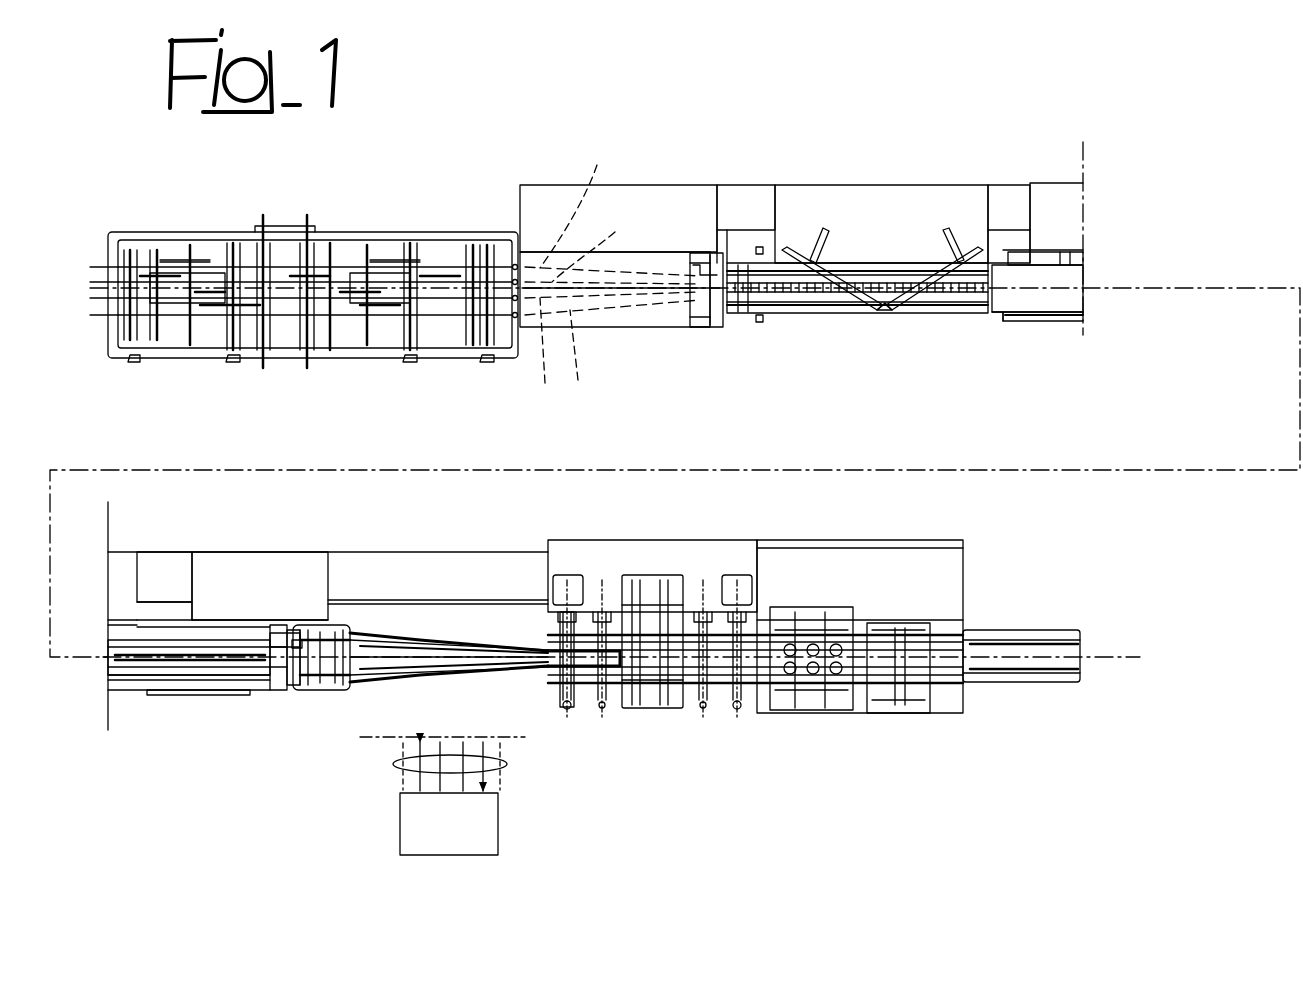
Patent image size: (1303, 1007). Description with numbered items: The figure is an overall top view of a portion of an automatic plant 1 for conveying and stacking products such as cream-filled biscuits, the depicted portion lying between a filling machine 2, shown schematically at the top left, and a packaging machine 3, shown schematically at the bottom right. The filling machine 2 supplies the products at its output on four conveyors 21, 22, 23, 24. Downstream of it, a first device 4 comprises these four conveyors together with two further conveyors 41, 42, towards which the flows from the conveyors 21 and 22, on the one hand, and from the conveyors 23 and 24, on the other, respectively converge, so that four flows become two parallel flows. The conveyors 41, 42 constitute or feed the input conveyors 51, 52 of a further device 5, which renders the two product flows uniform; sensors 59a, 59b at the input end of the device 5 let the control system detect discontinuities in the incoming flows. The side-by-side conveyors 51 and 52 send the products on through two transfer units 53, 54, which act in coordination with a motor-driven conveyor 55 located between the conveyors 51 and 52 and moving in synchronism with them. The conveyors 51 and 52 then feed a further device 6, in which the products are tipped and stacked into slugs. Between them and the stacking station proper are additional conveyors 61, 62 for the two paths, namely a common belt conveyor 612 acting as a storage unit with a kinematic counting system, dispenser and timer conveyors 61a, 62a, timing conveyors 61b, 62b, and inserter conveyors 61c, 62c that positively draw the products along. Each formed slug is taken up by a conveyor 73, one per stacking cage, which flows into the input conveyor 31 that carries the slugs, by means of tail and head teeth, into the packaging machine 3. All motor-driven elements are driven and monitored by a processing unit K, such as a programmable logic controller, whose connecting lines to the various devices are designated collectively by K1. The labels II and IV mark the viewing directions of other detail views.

The portion of automatic plant 1 is at (1040, 498).
The filling machine 2 is at (155, 228).
The conveyor 21 is at (577, 202).
The conveyor 22 is at (598, 241).
The conveyor 23 is at (547, 351).
The conveyor 24 is at (582, 354).
The packaging machine 3 is at (755, 735).
The input conveyor 31 is at (578, 710).
The first device 4 is at (602, 333).
The conveyor 41 is at (700, 265).
The conveyor 42 is at (697, 327).
The further device 5 is at (830, 166).
The input conveyor 51 is at (738, 275).
The input conveyor 52 is at (740, 302).
The transfer unit 53 is at (833, 313).
The transfer unit 54 is at (938, 306).
The motor-driven conveyor 55 is at (880, 272).
The sensor 59a is at (760, 252).
The sensor 59b is at (760, 322).
The further device 6 is at (330, 702).
The additional conveyors 61 is at (1033, 282).
The dispenser and timer conveyor 61a is at (228, 638).
The timing conveyor 61b is at (282, 640).
The inserter conveyor 61c is at (290, 648).
The belt conveyor 612 is at (1040, 302).
The additional conveyors 62 is at (1005, 325).
The dispenser and timer conveyor 62a is at (195, 680).
The timing conveyor 62b is at (270, 690).
The inserter conveyor 62c is at (285, 687).
The conveyor 73 is at (375, 645).
The view direction II is at (775, 372).
The view direction IV is at (380, 590).
The processing unit K is at (493, 843).
The connecting lines K1 is at (397, 763).